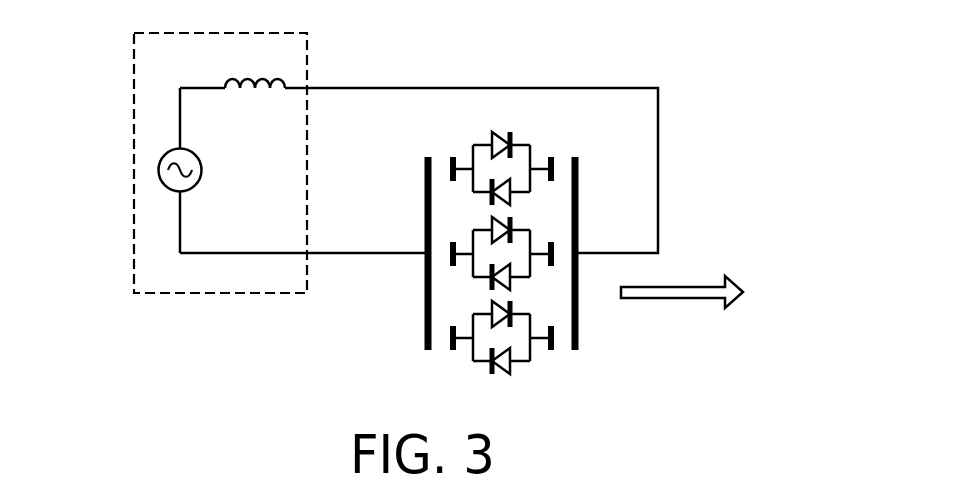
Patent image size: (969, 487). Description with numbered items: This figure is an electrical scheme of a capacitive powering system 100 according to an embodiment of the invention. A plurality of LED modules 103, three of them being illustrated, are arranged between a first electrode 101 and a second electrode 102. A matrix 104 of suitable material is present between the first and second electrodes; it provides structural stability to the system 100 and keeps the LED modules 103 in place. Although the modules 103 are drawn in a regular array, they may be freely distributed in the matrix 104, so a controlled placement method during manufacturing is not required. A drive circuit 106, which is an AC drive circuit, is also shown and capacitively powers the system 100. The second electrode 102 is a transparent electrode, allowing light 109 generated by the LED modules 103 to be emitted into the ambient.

The system 100 is at (722, 98).
The first electrode 101 is at (426, 326).
The second electrode 102 is at (579, 327).
The LED module 103 is at (530, 148).
The matrix 104 is at (562, 344).
The drive circuit 106 is at (133, 93).
The light 109 is at (700, 285).